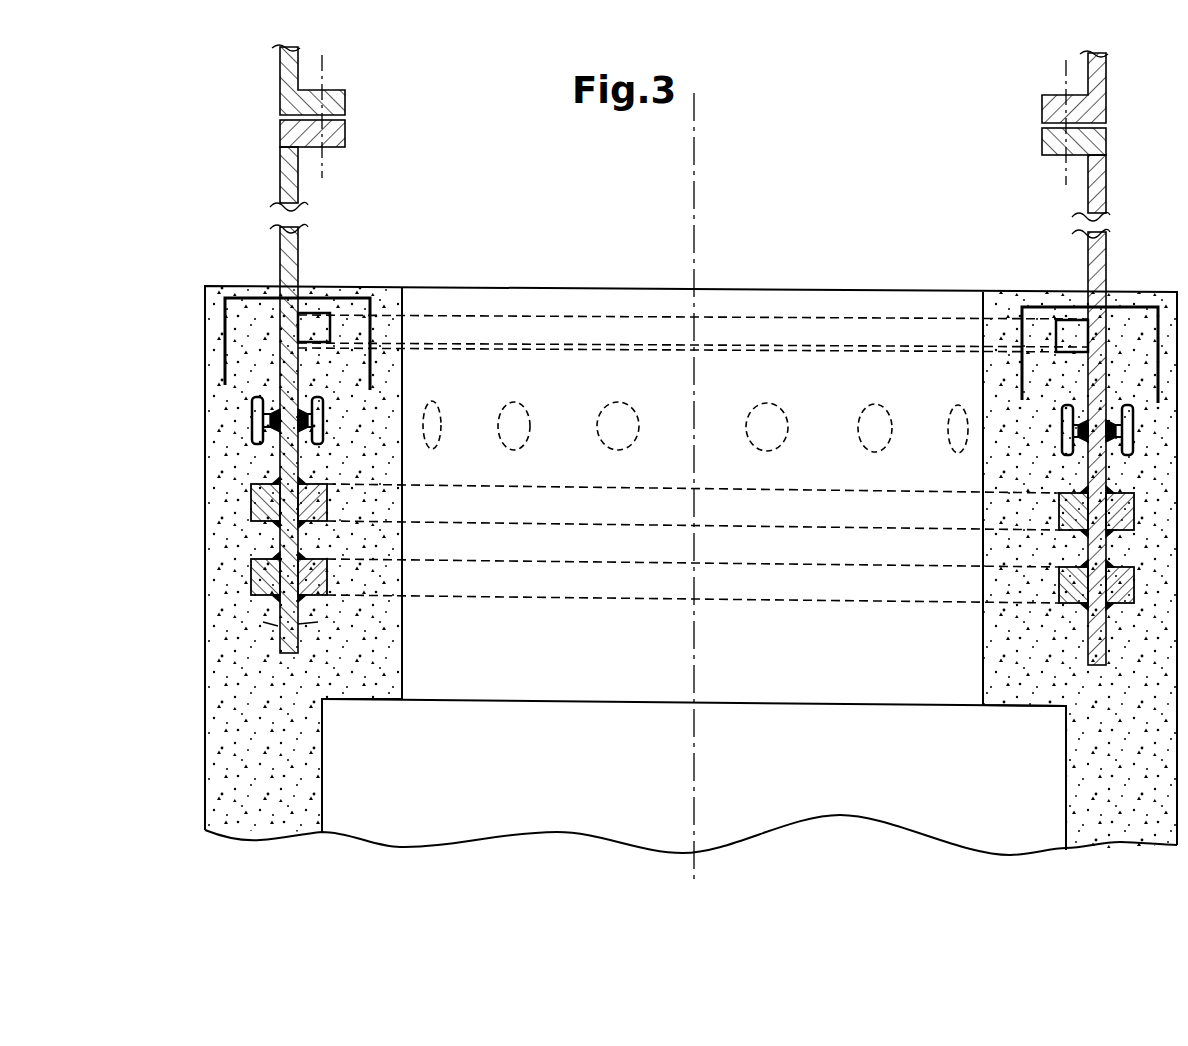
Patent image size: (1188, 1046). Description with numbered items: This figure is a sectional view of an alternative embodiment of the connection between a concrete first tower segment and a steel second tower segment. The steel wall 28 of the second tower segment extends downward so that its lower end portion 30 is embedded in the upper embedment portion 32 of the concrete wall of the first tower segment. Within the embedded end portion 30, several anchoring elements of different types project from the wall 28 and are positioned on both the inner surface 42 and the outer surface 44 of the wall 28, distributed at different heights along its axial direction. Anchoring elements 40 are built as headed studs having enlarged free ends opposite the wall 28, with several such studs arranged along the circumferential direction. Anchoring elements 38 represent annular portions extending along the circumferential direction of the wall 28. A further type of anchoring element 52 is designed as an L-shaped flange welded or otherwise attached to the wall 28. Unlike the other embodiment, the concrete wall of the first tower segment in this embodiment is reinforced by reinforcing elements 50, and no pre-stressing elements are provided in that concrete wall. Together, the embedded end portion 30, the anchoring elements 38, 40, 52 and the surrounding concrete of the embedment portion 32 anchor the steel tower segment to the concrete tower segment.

The wall 28 is at (287, 172).
The lower end portion 30 is at (180, 283).
The upper embedment portion 32 is at (130, 283).
The anchoring element 38 is at (325, 500).
The anchoring element 40 is at (323, 422).
The inner surface 42 is at (298, 627).
The outer surface 44 is at (280, 627).
The reinforcing element 50 is at (233, 287).
The anchoring element 52 is at (318, 320).